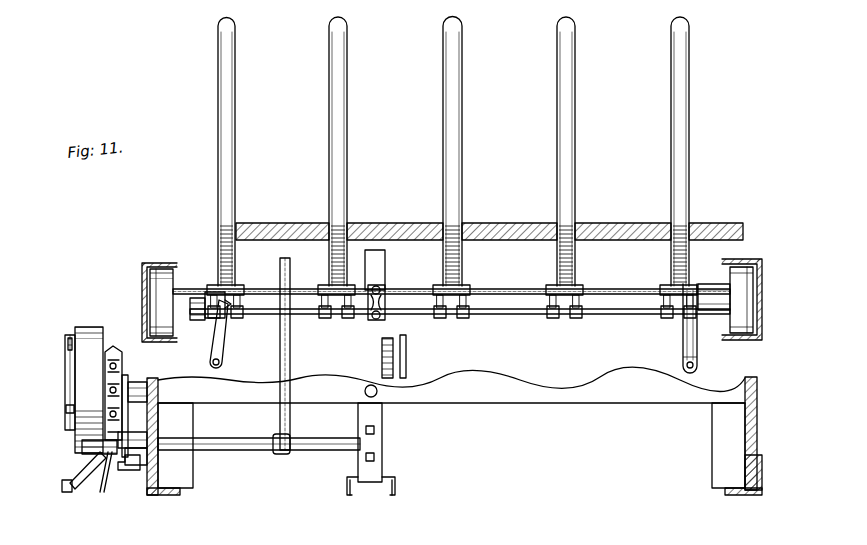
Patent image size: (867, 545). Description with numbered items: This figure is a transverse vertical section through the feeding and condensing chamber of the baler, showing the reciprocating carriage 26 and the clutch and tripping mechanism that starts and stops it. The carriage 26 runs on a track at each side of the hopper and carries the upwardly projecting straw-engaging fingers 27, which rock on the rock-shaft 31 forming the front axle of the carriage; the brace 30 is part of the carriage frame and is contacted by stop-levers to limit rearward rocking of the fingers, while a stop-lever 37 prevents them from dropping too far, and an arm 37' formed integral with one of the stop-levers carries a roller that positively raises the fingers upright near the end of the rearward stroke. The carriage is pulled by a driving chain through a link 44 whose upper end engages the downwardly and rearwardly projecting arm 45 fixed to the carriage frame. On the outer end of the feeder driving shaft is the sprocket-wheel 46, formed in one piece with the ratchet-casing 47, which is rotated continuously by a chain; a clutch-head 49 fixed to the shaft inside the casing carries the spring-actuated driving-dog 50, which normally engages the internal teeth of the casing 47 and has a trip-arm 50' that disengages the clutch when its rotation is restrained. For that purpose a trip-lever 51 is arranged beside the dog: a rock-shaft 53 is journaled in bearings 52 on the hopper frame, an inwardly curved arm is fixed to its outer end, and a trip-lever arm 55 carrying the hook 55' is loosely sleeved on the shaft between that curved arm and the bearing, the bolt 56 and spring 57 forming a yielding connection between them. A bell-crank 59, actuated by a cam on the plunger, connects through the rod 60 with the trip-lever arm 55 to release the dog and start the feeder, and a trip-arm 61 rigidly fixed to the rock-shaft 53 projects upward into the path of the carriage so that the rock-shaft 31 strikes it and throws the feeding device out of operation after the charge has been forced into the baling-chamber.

The straw-engaging fingers 27 is at (336, 142).
The rock-shaft 31 is at (612, 289).
The brace 30 is at (625, 314).
The carriage 26 is at (506, 289).
The stop-lever 37 is at (189, 321).
The arm 37' is at (234, 314).
The spring 57 is at (222, 350).
The trip-arm 61 is at (290, 348).
The rock-shaft 53 is at (246, 450).
The arm 45 is at (382, 352).
The link 44 is at (406, 352).
The ratchet-casing 47 is at (88, 327).
The driving-dog 50 is at (56, 382).
The trip-arm 50' is at (56, 340).
The clutch-head 49 is at (66, 406).
The sprocket-wheel 46 is at (112, 385).
The rod 60 is at (126, 378).
The bell-crank 59 is at (145, 385).
The bearings 52 is at (132, 440).
The trip-lever arm 55 is at (88, 484).
The hook 55' is at (51, 485).
The trip-lever 51 is at (103, 475).
The bolt 56 is at (128, 470).